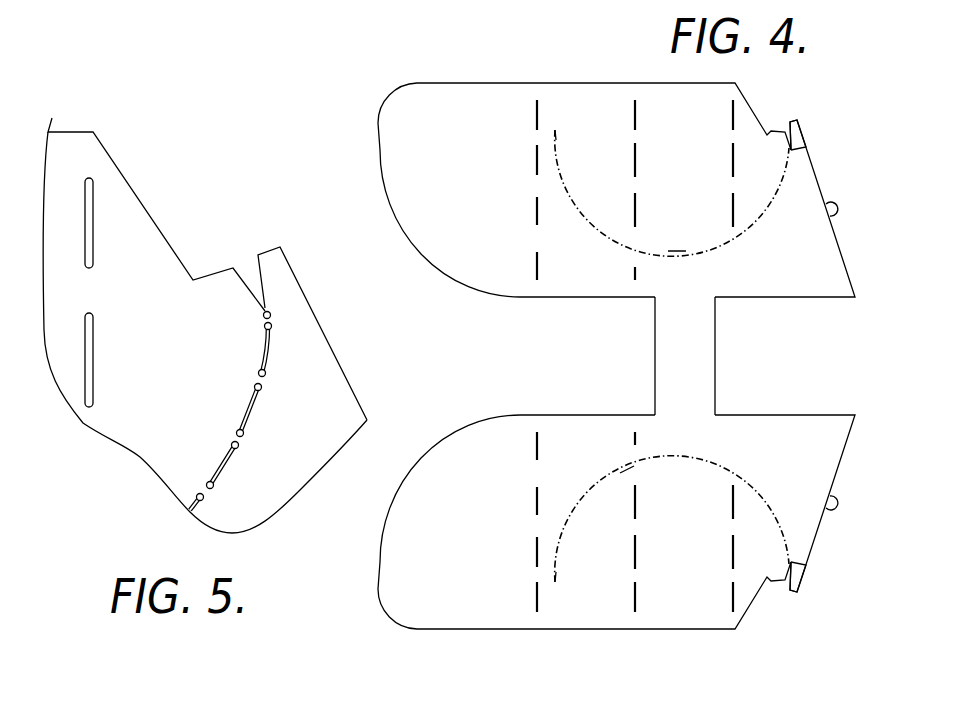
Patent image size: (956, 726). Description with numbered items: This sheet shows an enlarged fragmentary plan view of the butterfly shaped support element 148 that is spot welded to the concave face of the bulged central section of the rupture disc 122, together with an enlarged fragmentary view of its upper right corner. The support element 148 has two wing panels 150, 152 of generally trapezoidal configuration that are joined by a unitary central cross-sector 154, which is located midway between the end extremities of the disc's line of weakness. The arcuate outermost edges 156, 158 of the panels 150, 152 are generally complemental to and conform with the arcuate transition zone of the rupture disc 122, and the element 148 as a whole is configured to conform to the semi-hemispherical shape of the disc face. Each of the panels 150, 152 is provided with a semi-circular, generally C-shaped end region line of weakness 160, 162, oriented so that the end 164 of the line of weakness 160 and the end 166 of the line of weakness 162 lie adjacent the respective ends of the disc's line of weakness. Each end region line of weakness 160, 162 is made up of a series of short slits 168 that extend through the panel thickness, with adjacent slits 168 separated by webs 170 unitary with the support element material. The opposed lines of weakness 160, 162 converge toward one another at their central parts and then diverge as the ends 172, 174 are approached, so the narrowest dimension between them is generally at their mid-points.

In FIG. 5, the rupture disc 122 is at (240, 13).
In FIG. 4, the butterfly shaped support element 148 is at (385, 93).
In FIG. 5, the butterfly shaped support element 148 is at (131, 172).
In FIG. 4, the wing panel 150 is at (453, 268).
In FIG. 5, the wing panel 150 is at (155, 258).
In FIG. 4, the wing panel 152 is at (460, 445).
In FIG. 4, the central cross-sector 154 is at (662, 342).
In FIG. 4, the arcuate outermost edge 156 is at (836, 217).
In FIG. 4, the arcuate outermost edge 158 is at (832, 512).
In FIG. 4, the end region line of weakness 160 is at (612, 255).
In FIG. 5, the end region line of weakness 160 is at (210, 457).
In FIG. 4, the end region line of weakness 162 is at (726, 450).
In FIG. 4, the end of line of weakness 164 is at (794, 149).
In FIG. 5, the end of line of weakness 164 is at (272, 328).
In FIG. 4, the end of line of weakness 166 is at (800, 566).
In FIG. 4, the slits 168 is at (677, 250).
In FIG. 5, the slits 168 is at (257, 409).
In FIG. 5, the webs 170 is at (242, 443).
In FIG. 4, the end of line of weakness 172 is at (553, 130).
In FIG. 4, the end of line of weakness 174 is at (554, 586).